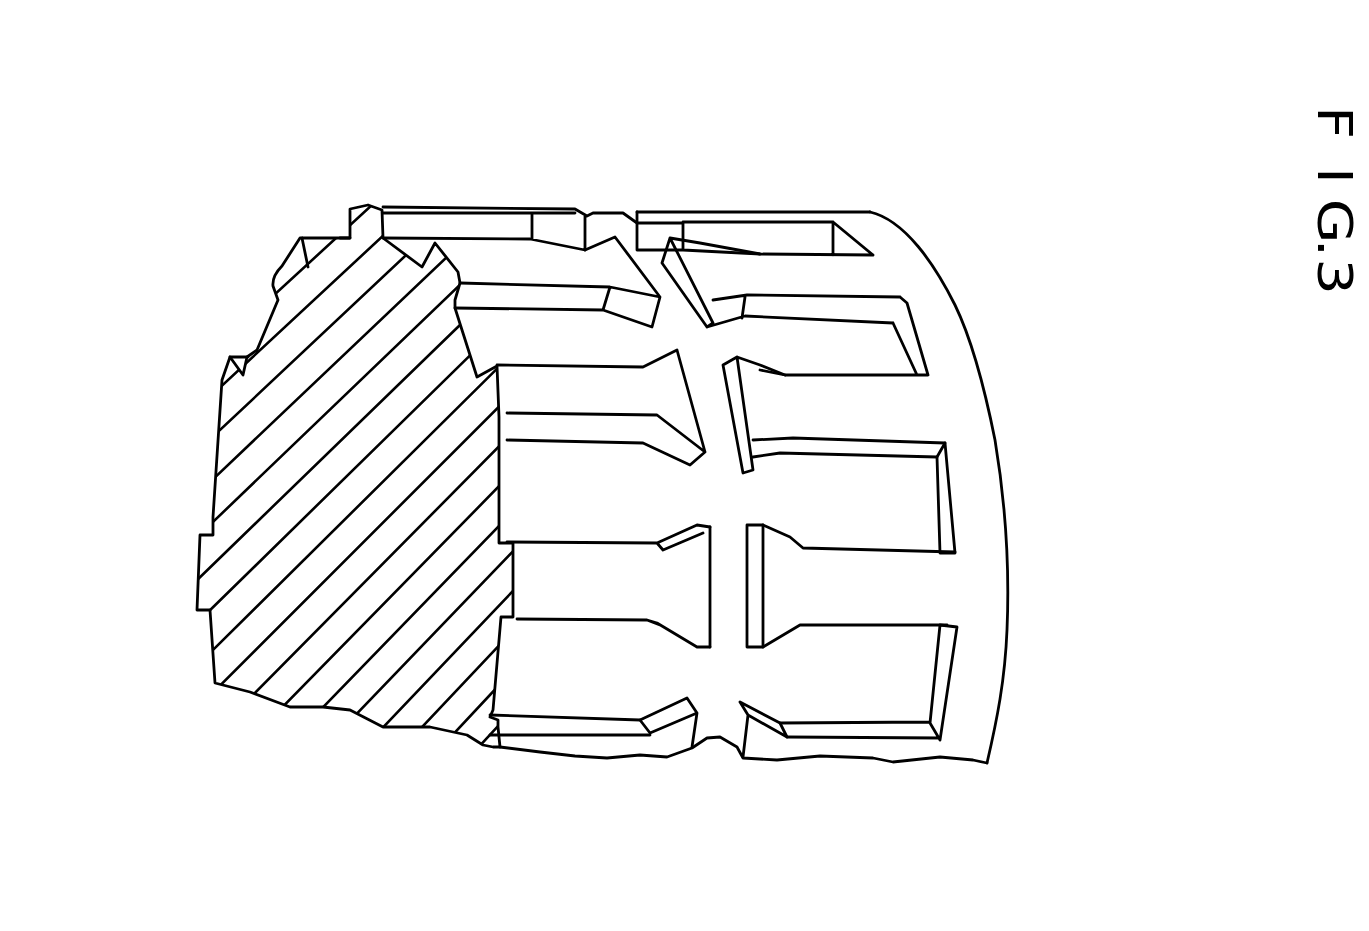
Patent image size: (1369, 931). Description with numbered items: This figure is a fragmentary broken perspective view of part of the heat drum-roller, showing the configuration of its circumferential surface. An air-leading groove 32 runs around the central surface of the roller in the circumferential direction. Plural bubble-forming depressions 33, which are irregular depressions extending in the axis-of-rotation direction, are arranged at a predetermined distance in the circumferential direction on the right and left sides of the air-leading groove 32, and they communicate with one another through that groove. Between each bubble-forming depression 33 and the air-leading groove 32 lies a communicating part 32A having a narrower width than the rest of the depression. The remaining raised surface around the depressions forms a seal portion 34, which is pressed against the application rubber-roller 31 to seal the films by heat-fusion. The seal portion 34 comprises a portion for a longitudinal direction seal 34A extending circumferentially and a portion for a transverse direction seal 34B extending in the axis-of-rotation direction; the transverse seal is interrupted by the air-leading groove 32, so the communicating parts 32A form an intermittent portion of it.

The application rubber-roller 31 is at (973, 347).
The air-leading groove 32 is at (730, 620).
The communicating parts 32A is at (692, 673).
The bubble-forming depressions 33 is at (543, 340).
The seal portion 34 is at (483, 258).
The portion for a longitudinal direction seal 34A is at (973, 705).
The portion for a transverse direction seal 34B is at (853, 603).